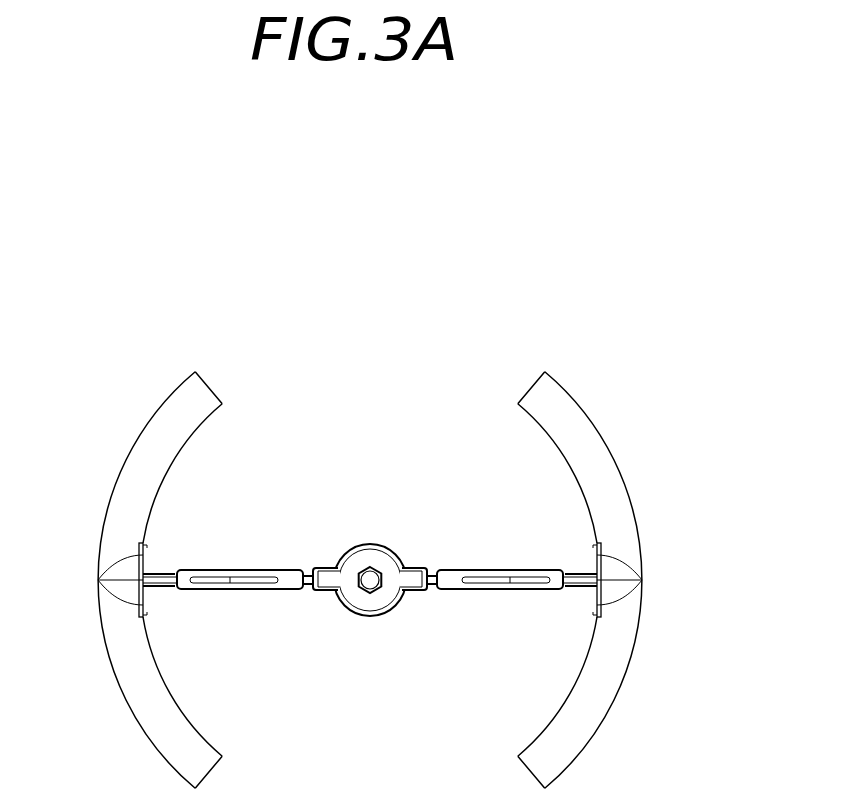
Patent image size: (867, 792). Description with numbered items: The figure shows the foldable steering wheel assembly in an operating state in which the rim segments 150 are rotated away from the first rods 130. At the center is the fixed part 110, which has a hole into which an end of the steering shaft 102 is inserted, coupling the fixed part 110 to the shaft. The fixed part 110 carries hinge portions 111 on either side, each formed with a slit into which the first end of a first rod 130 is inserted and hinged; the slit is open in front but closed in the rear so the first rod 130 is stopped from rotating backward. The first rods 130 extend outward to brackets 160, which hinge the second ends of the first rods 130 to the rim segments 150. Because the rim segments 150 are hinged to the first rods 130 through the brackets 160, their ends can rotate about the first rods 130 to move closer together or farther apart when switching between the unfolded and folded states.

The steering shaft 102 is at (366, 592).
The fixed part 110 is at (371, 556).
The hinge portion 111 is at (327, 575).
The first rod 130 is at (258, 588).
The rim segment 150 is at (138, 472).
The bracket 160 is at (672, 580).